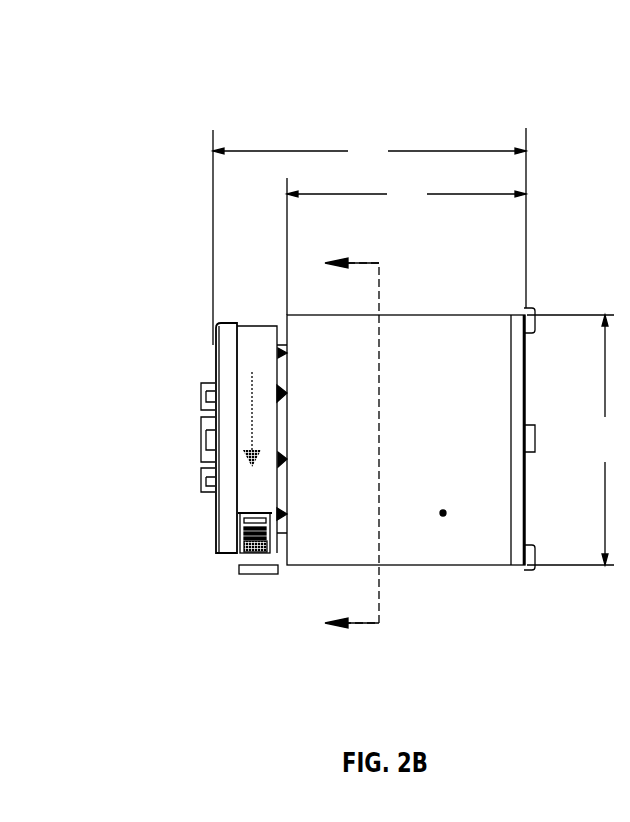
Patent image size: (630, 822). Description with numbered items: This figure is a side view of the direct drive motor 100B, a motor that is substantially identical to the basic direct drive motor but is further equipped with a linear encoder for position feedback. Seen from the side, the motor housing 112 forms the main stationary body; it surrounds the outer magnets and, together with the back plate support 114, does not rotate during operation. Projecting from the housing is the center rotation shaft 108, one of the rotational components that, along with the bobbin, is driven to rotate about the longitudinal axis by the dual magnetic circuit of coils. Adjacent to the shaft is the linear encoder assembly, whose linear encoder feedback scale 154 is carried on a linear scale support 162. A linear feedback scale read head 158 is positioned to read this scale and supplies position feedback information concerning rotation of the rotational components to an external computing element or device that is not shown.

The direct drive motor 100B is at (495, 106).
The center rotation shaft 108 is at (200, 443).
The motor housing 112 is at (443, 513).
The back plate support 114 is at (513, 528).
The linear encoder feedback scale 154 is at (240, 523).
The linear feedback scale read head 158 is at (250, 571).
The linear scale support 162 is at (212, 344).